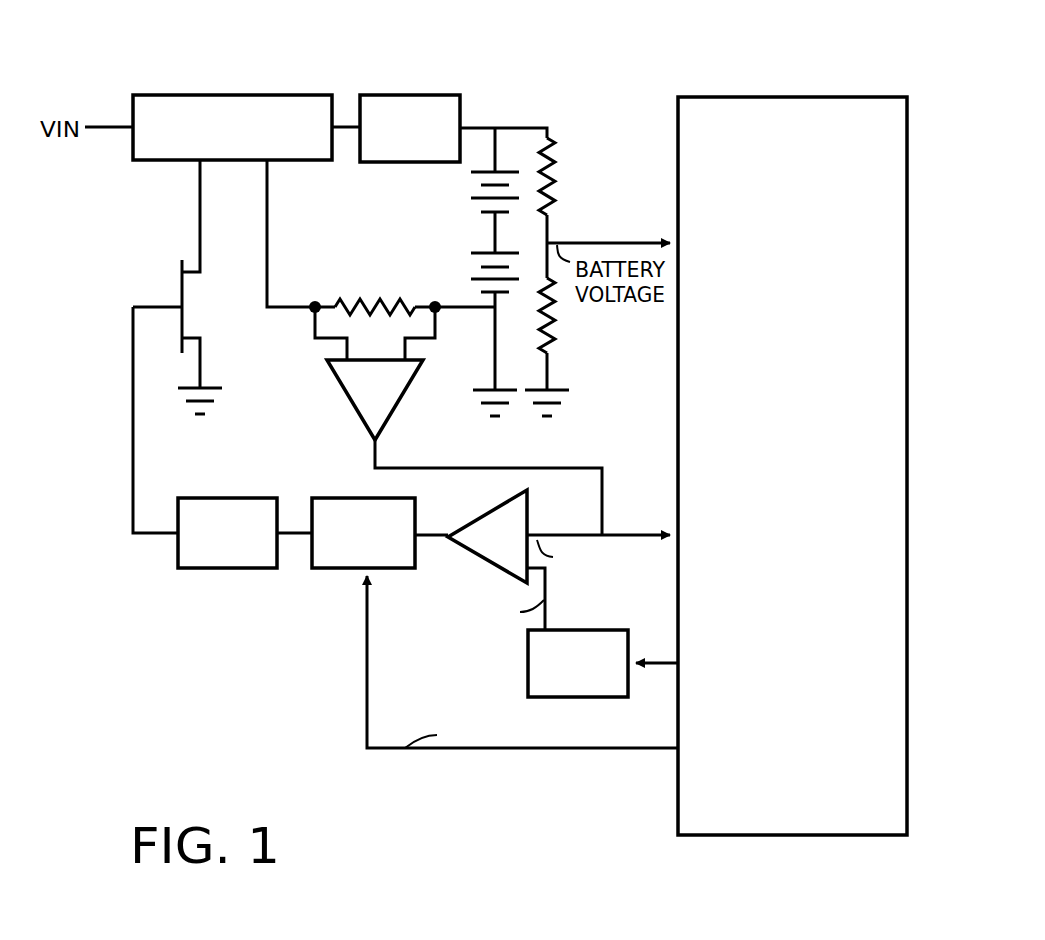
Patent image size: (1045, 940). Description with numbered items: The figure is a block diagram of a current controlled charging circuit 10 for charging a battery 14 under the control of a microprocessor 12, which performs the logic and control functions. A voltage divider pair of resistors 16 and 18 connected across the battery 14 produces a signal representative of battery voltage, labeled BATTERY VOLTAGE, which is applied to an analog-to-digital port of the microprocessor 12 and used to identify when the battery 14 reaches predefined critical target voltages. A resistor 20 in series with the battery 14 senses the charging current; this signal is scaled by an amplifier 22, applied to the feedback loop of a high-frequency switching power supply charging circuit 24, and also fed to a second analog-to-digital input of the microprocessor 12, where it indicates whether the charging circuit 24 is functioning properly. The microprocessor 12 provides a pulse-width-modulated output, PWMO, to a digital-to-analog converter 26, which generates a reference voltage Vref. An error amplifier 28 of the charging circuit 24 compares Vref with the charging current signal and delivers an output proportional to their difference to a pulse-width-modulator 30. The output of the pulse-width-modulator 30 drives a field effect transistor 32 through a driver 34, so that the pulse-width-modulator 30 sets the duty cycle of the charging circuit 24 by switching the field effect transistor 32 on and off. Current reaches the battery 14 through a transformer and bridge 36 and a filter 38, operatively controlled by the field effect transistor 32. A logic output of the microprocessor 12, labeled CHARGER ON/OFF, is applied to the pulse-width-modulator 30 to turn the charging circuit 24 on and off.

The current controlled charging circuit 10 is at (580, 80).
The microprocessor 12 is at (792, 466).
The battery 14 is at (474, 201).
The resistor 16 is at (557, 163).
The resistor 18 is at (551, 345).
The resistor 20 is at (410, 300).
The amplifier 22 is at (375, 373).
The high-frequency switching power supply charging circuit 24 is at (428, 619).
The digital-to-analog converter 26 is at (578, 663).
The error amplifier 28 is at (487, 536).
The pulse-width-modulator 30 is at (363, 533).
The field effect transistor 32 is at (186, 300).
The driver 34 is at (227, 533).
The transformer and bridge 36 is at (232, 127).
The filter 38 is at (410, 128).